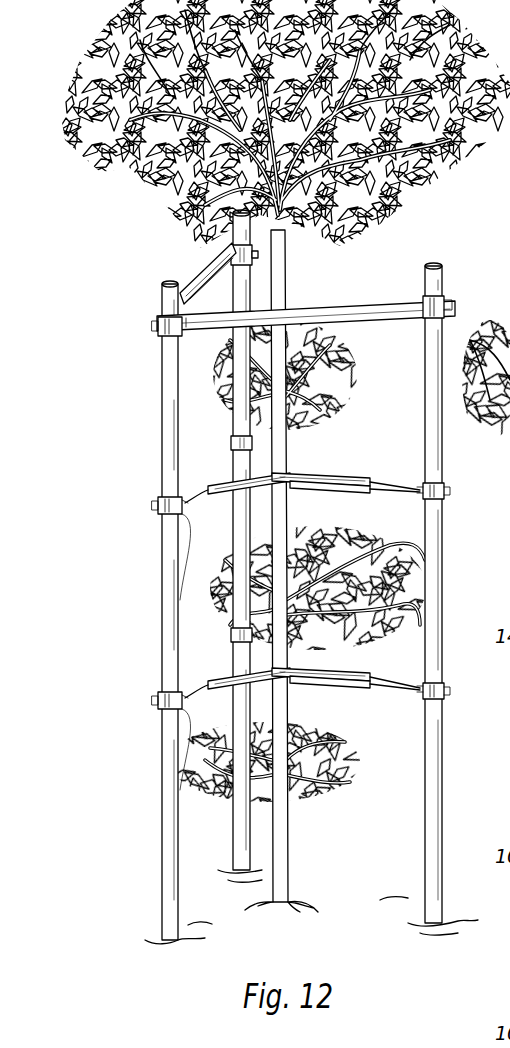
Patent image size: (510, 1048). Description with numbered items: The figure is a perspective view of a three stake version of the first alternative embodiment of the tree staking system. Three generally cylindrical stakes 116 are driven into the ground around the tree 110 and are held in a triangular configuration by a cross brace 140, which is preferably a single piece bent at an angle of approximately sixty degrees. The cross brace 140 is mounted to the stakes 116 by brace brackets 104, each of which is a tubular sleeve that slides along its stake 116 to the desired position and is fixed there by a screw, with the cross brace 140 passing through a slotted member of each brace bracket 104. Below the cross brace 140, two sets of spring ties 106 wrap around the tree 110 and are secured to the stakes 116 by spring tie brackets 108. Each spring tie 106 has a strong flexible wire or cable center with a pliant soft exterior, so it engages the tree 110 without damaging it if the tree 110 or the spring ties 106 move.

The brace bracket 104 is at (445, 296).
The spring tie 106 is at (184, 513).
The spring tie bracket 108 is at (444, 494).
The tree 110 is at (287, 810).
The stake 116 is at (428, 797).
The cross brace 140 is at (187, 336).